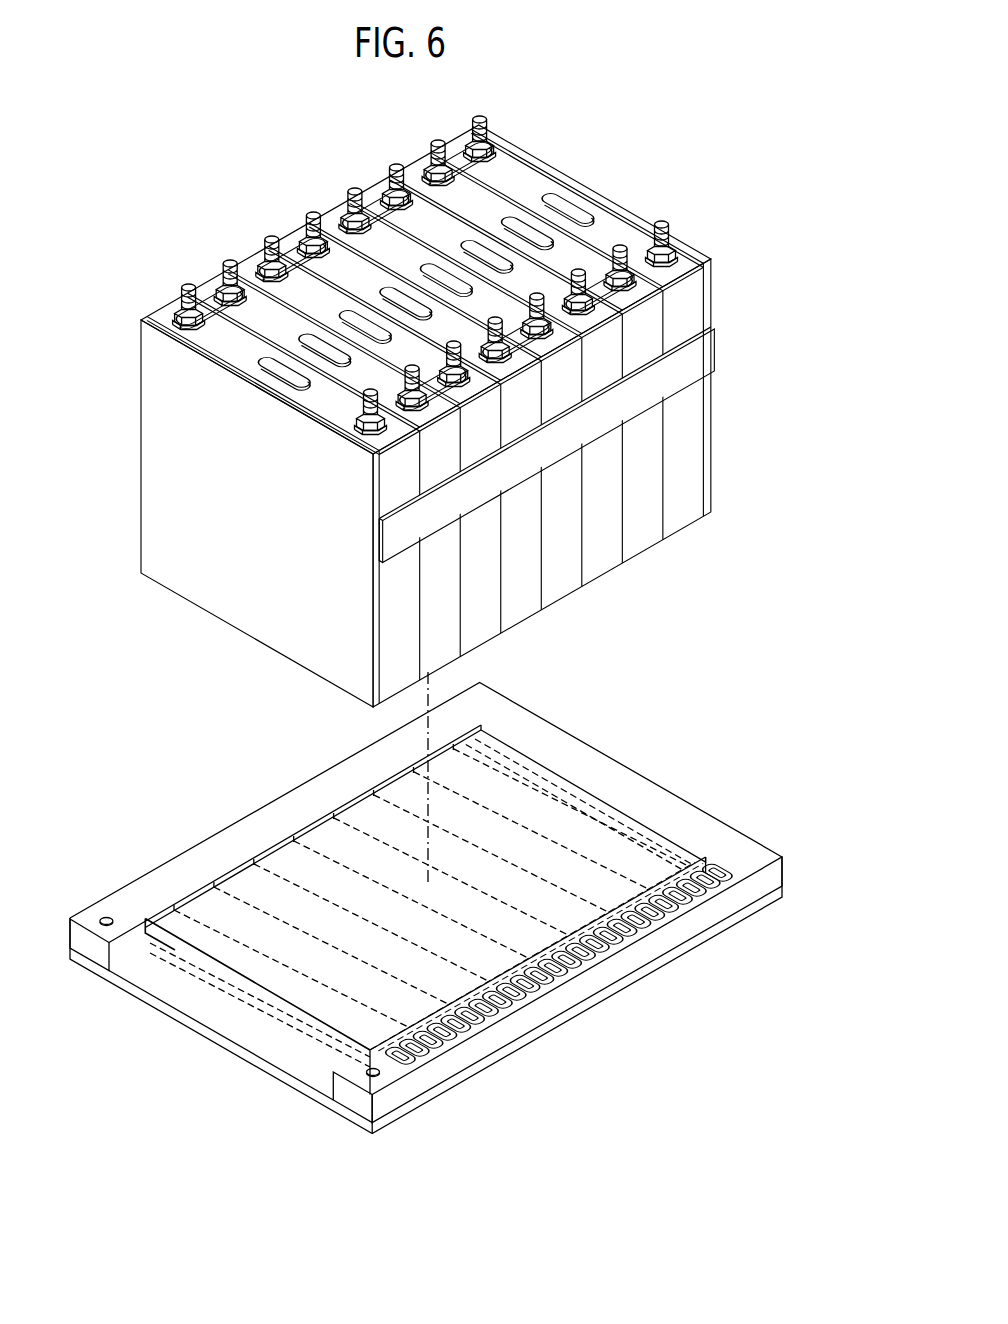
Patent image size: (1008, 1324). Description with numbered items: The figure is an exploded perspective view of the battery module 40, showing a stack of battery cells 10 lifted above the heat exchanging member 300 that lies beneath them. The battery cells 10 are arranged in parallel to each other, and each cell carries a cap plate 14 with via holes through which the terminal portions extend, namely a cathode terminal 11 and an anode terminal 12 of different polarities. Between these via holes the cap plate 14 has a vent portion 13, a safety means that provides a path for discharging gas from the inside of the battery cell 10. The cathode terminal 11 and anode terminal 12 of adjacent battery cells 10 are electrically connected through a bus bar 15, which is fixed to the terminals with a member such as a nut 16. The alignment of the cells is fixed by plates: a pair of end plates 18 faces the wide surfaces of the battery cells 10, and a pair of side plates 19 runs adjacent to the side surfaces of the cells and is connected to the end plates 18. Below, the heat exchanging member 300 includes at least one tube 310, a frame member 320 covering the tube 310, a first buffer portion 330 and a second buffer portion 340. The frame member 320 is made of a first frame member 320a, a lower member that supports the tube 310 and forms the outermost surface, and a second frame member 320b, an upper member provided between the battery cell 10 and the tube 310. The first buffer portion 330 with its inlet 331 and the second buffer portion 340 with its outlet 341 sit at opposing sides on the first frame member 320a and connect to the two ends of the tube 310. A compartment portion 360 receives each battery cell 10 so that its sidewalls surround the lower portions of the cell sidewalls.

The battery module 40 is at (432, 384).
The battery cell 10 is at (650, 492).
The cathode terminal 11 is at (479, 117).
The anode terminal 12 is at (661, 222).
The vent portion 13 is at (570, 205).
The cap plate 14 is at (606, 232).
The bus bar 15 is at (197, 298).
The nut 16 is at (262, 256).
The end plate 18 is at (158, 450).
The side plate 19 is at (704, 363).
The heat exchanging member 300 is at (406, 937).
The tube 310 is at (345, 1055).
The frame member 320 is at (406, 936).
The first frame member 320a is at (190, 1022).
The second frame member 320b is at (196, 940).
The first buffer portion 330 is at (180, 872).
The inlet 331 is at (101, 916).
The second buffer portion 340 is at (520, 1028).
The outlet 341 is at (370, 1080).
The compartment portion 360 is at (332, 878).